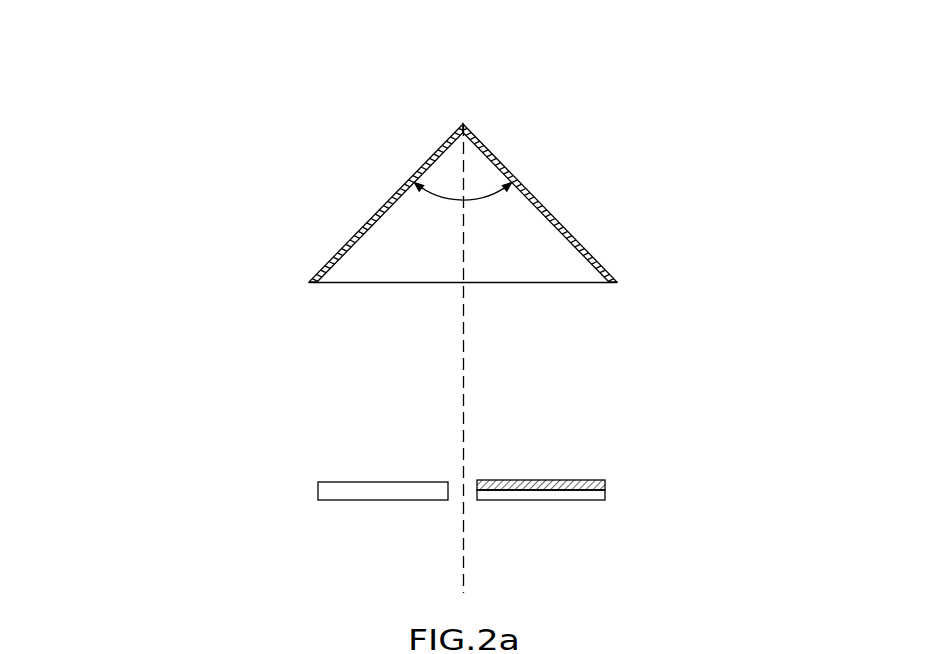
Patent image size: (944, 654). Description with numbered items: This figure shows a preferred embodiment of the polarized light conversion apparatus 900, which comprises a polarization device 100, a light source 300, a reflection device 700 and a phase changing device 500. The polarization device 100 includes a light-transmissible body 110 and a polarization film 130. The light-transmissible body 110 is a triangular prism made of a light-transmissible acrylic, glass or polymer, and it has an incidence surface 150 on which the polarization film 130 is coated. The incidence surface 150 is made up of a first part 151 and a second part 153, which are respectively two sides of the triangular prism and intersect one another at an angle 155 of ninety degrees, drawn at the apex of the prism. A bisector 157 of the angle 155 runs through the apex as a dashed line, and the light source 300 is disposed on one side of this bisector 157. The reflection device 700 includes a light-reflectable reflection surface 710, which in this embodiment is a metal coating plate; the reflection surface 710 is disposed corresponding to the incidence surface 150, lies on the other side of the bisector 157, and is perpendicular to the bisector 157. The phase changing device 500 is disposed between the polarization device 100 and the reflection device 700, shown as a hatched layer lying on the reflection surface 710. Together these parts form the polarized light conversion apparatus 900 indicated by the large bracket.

The polarization device 100 is at (373, 170).
The light-transmissible body 110 is at (373, 267).
The polarization film 130 is at (418, 146).
The incidence surface 150 is at (463, 146).
The first part 151 is at (424, 160).
The second part 153 is at (497, 156).
The angle 155 is at (473, 200).
The bisector 157 is at (463, 392).
The light source 300 is at (348, 487).
The phase changing device 500 is at (577, 480).
The reflection device 700 is at (583, 530).
The reflection surface 710 is at (585, 493).
The polarized light conversion apparatus 900 is at (717, 97).